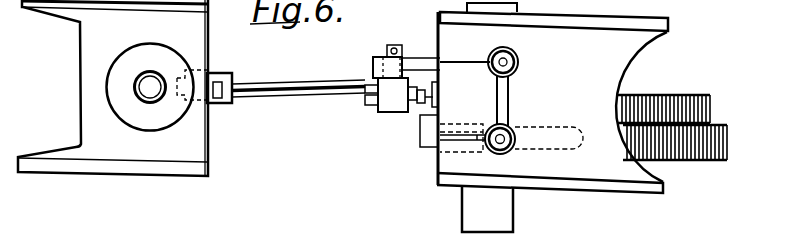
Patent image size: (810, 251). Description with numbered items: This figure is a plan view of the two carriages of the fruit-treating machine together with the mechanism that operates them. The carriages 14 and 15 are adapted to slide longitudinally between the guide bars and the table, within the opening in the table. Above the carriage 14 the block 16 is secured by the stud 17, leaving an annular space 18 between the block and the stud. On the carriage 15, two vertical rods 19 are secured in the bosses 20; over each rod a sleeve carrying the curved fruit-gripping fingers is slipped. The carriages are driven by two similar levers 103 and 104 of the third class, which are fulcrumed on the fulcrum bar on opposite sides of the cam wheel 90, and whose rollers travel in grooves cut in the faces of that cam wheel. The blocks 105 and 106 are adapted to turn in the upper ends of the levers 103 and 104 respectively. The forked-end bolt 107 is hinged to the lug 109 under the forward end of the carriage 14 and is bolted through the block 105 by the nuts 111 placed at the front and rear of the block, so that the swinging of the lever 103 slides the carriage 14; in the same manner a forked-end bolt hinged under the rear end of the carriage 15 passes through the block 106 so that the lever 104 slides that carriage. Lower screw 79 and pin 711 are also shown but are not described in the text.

The carriage 14 is at (195, 30).
The carriage 15 is at (670, 25).
The block 16 is at (115, 98).
The stud 17 is at (137, 83).
The annular space 18 is at (143, 72).
The vertical rod 19 is at (517, 58).
The boss 20 is at (527, 92).
The screw 79 is at (517, 148).
The cam wheel 90 is at (710, 120).
The lever 103 is at (377, 55).
The lever 104 is at (427, 145).
The block 105 is at (392, 107).
The block 106 is at (437, 92).
The forked-end bolt 107 is at (307, 98).
The lug 109 is at (208, 110).
The nut 111 is at (373, 85).
The pin 711 is at (437, 107).